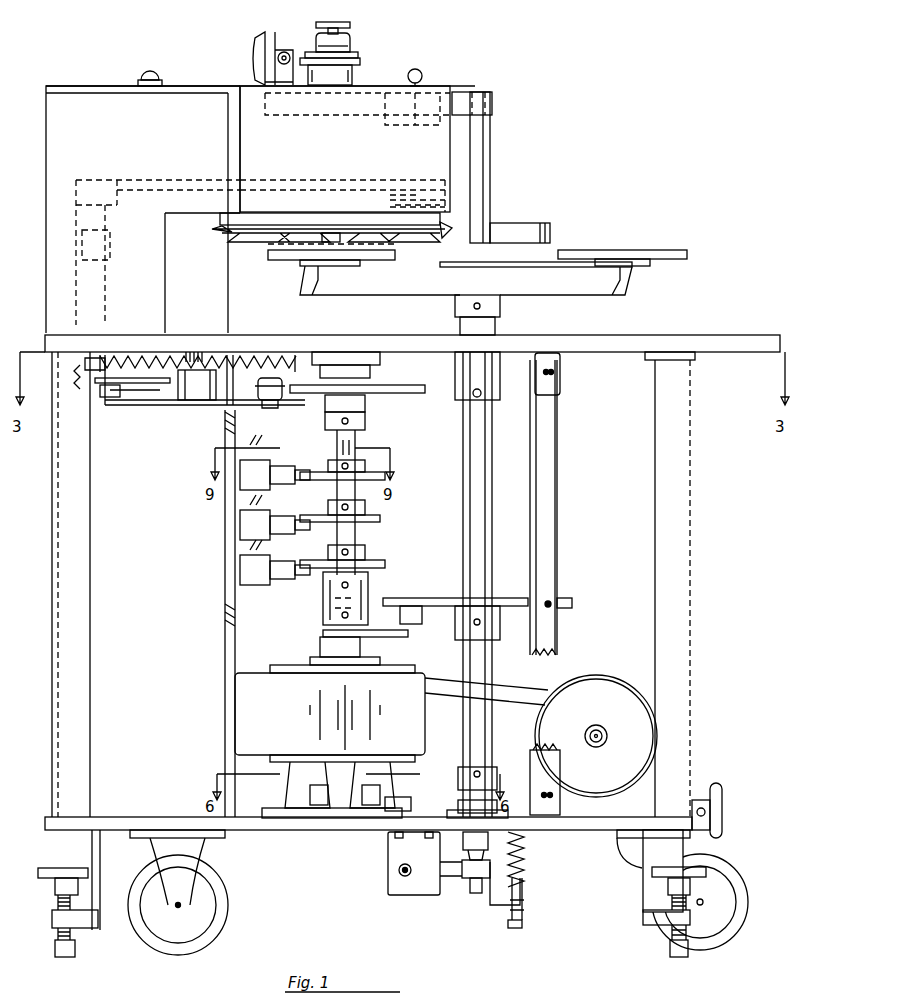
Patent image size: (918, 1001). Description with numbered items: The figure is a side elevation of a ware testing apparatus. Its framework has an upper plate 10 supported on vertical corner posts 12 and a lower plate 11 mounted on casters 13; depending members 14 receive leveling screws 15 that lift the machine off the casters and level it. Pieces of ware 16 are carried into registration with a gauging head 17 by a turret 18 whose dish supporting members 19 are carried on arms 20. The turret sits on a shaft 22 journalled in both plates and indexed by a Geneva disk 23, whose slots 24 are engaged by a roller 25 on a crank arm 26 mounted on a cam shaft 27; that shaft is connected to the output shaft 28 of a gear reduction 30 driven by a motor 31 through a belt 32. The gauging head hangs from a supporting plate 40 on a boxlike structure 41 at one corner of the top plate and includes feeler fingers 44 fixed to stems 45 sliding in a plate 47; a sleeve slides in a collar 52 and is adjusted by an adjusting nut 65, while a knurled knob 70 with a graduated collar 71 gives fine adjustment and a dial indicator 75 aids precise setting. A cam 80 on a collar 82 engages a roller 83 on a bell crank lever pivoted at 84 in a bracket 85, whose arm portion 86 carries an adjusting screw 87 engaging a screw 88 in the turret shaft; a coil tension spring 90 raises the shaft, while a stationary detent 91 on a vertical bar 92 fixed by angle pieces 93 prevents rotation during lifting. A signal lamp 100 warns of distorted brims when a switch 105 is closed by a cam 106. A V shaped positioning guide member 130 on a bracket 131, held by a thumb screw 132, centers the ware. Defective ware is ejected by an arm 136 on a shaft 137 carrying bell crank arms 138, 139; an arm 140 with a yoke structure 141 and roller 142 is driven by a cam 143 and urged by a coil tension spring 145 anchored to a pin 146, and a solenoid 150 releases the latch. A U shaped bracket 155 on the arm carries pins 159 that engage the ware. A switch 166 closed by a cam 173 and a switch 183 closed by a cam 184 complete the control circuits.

The upper plate 10 is at (676, 344).
The lower plate 11 is at (576, 830).
The vertical corner posts 12 is at (81, 644).
The casters 13 is at (221, 892).
The depending members 14 is at (98, 875).
The leveling screws 15 is at (54, 938).
The pieces of ware 16 is at (396, 248).
The gauging head 17 is at (345, 149).
The turret 18 is at (500, 306).
The dish supporting members 19 is at (280, 264).
The arms 20 is at (391, 294).
The shaft 22 is at (488, 416).
The Geneva disk 23 is at (570, 598).
The slots 24 is at (404, 598).
The roller 25 is at (422, 616).
The crank arm 26 is at (408, 636).
The shaft 27 is at (352, 546).
The output shaft 28 is at (324, 652).
The gear reduction 30 is at (330, 713).
The driving motor 31 is at (596, 736).
The belt 32 is at (519, 678).
The supporting plate 40 is at (202, 86).
The boxlike structure 41 is at (143, 209).
The feeler fingers 44 is at (246, 242).
The stem 45 is at (221, 232).
The plate 47 is at (455, 228).
The collar 52 is at (353, 81).
The adjusting nut 65 is at (361, 59).
The knurled knob 70 is at (349, 24).
The graduated collar 71 is at (351, 40).
The dial indicator 75 is at (270, 32).
The cam 80 is at (332, 790).
The collar 82 is at (385, 791).
The roller 83 is at (412, 806).
The pivot 84 is at (398, 872).
The bracket 85 is at (414, 863).
The arm portion 86 is at (480, 881).
The adjusting screw 87 is at (473, 898).
The screw 88 is at (464, 846).
The coil tension spring 90 is at (523, 866).
The stationary detent 91 is at (530, 602).
The vertically extending bar 92 is at (554, 494).
The angle pieces 93 is at (560, 382).
The signal lamp 100 is at (138, 78).
The switch 105 is at (268, 460).
The cam 106 is at (382, 476).
The positioning guide member 130 is at (525, 226).
The bracket 131 is at (491, 102).
The thumb screw 132 is at (422, 77).
The arm 136 is at (292, 184).
The shaft 137 is at (106, 275).
The arm 138 is at (92, 360).
The arm 139 is at (126, 388).
The arm 140 is at (170, 408).
The yoke structure 141 is at (323, 416).
The roller 142 is at (278, 382).
The cam 143 is at (390, 386).
The coil tension spring 145 is at (237, 358).
The pin 146 is at (296, 340).
The solenoid 150 is at (197, 385).
The U shaped bracket 155 is at (380, 197).
The pins 159 is at (401, 208).
The switch 166 is at (262, 507).
The cam 173 is at (378, 521).
The switch 183 is at (262, 552).
The cam 184 is at (380, 566).